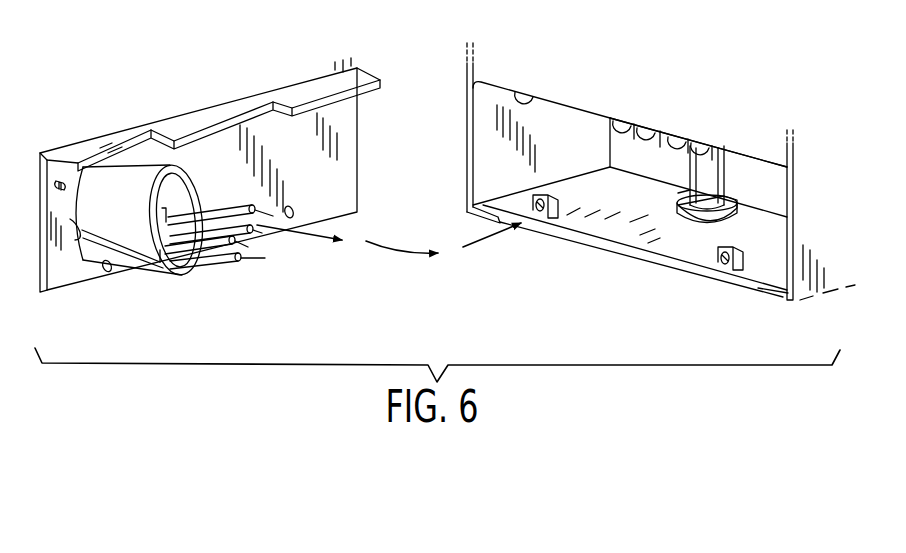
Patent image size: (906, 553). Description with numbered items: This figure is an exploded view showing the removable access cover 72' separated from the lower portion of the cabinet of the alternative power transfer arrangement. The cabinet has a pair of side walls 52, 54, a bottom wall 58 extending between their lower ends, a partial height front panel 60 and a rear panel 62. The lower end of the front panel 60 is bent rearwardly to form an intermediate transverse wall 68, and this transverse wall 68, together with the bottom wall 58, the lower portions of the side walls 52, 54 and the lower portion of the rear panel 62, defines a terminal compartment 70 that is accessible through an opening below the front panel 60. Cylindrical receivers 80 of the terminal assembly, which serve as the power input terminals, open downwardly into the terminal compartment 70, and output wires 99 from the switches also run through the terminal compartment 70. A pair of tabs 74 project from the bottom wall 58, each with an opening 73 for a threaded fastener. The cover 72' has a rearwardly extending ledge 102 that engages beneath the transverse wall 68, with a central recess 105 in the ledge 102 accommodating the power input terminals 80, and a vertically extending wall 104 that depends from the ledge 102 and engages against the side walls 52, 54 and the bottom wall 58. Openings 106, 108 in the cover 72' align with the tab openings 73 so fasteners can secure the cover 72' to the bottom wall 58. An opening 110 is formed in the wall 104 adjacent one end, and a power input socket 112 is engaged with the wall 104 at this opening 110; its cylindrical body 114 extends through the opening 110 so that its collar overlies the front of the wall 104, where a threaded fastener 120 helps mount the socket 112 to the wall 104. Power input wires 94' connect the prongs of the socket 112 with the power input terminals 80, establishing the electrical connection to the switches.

The removable access cover 72' is at (225, 182).
The ledge 102 is at (327, 82).
The vertically extending wall 104 is at (343, 145).
The central recess 105 is at (222, 121).
The opening 106 is at (291, 207).
The opening 108 is at (107, 273).
The opening 110 is at (78, 240).
The power input socket 112 is at (121, 186).
The cylindrical body 114 is at (97, 240).
The threaded fastener 120 is at (57, 180).
The power input wires 94' is at (216, 206).
The side wall 52 is at (490, 162).
The side wall 54 is at (790, 238).
The bottom wall 58 is at (658, 258).
The front panel 60 is at (770, 150).
The rear panel 62 is at (770, 182).
The intermediate transverse wall 68 is at (515, 95).
The terminal compartment 70 is at (571, 149).
The openings 73 is at (543, 200).
The tabs 74 is at (548, 220).
The cylindrical receivers 80 is at (631, 120).
The output wires 99 is at (700, 180).